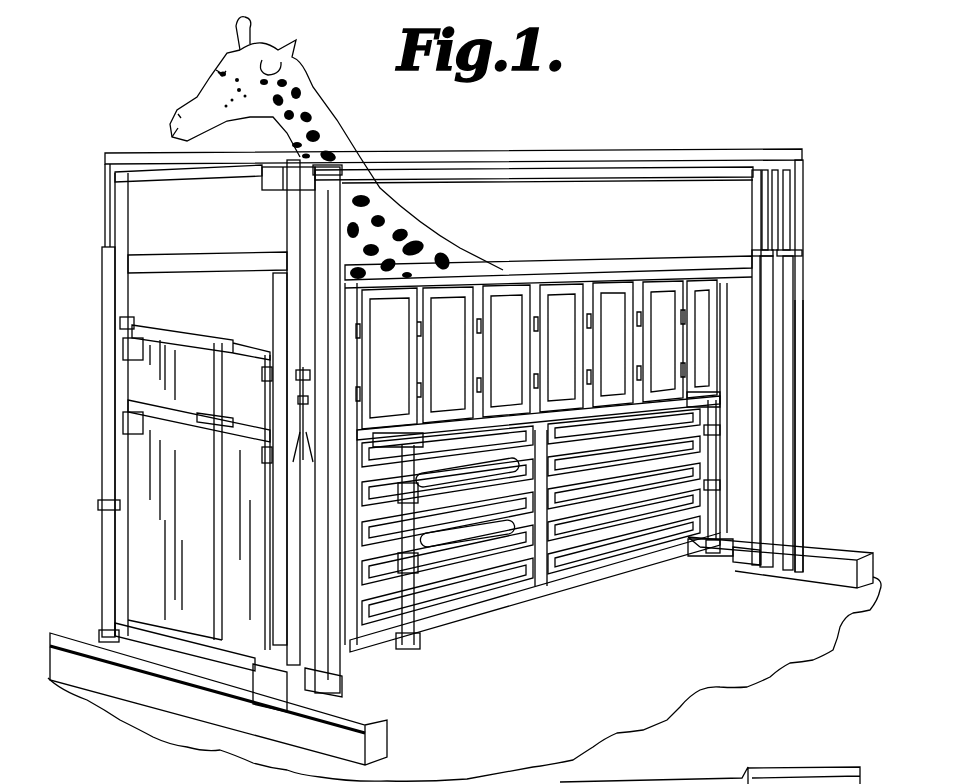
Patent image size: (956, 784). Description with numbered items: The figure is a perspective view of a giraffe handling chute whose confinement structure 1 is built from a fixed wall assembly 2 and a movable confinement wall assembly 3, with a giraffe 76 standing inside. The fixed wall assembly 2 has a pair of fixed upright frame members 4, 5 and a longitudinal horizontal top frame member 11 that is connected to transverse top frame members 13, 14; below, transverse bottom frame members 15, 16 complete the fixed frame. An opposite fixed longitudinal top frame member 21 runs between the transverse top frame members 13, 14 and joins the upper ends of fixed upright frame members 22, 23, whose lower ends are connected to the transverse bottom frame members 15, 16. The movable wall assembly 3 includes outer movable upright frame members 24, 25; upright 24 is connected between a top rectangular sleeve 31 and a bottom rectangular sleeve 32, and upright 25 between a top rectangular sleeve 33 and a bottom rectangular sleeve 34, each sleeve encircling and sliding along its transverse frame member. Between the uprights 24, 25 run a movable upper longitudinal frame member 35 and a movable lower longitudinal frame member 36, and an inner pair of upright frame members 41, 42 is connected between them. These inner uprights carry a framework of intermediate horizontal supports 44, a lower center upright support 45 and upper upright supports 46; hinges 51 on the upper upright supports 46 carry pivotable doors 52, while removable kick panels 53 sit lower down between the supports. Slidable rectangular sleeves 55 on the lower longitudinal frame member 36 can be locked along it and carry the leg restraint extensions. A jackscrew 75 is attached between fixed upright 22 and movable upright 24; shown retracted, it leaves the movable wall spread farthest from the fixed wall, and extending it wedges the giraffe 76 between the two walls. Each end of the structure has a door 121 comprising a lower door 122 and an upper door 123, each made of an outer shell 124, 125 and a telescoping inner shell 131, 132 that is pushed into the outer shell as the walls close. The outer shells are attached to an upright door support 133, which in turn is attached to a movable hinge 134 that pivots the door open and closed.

The confinement structure 1 is at (648, 125).
The fixed wall assembly 2 is at (92, 452).
The movable confinement wall assembly 3 is at (577, 597).
The fixed upright frame member 4 is at (102, 298).
The fixed upright frame member 5 is at (600, 250).
The longitudinal horizontal top frame member 11 is at (420, 160).
The transverse top frame member 13 is at (220, 178).
The transverse top frame member 14 is at (690, 148).
The transverse bottom frame member 15 is at (100, 638).
The transverse bottom frame member 16 is at (728, 556).
The fixed longitudinal top frame member 21 is at (722, 170).
The fixed upright frame member 22 is at (340, 685).
The fixed upright frame member 23 is at (800, 525).
The outer movable upright frame member 24 is at (278, 296).
The outer movable upright frame member 25 is at (757, 230).
The top rectangular sleeve 31 is at (279, 188).
The bottom rectangular sleeve 32 is at (287, 680).
The top rectangular sleeve 33 is at (770, 150).
The bottom rectangular sleeve 34 is at (757, 560).
The movable upper longitudinal frame member 35 is at (677, 260).
The movable lower longitudinal frame member 36 is at (436, 618).
The inner upright frame member 41 is at (395, 634).
The inner upright frame member 42 is at (720, 492).
The intermediate horizontal support 44 is at (470, 545).
The lower center upright support 45 is at (520, 510).
The upper upright support 46 is at (578, 305).
The hinge 51 is at (524, 385).
The door 52 is at (436, 369).
The kick panel 53 is at (590, 517).
The slidable rectangular sleeve 55 is at (690, 556).
The jackscrew 75 is at (298, 400).
The giraffe 76 is at (347, 132).
The door 121 is at (180, 325).
The lower door 122 is at (210, 572).
The upper door 123 is at (203, 392).
The outer shell 124 is at (158, 487).
The outer shell 125 is at (153, 397).
The telescoping inner shell 131 is at (251, 517).
The telescoping inner shell 132 is at (251, 377).
The upright door support 133 is at (133, 322).
The movable hinge 134 is at (105, 505).